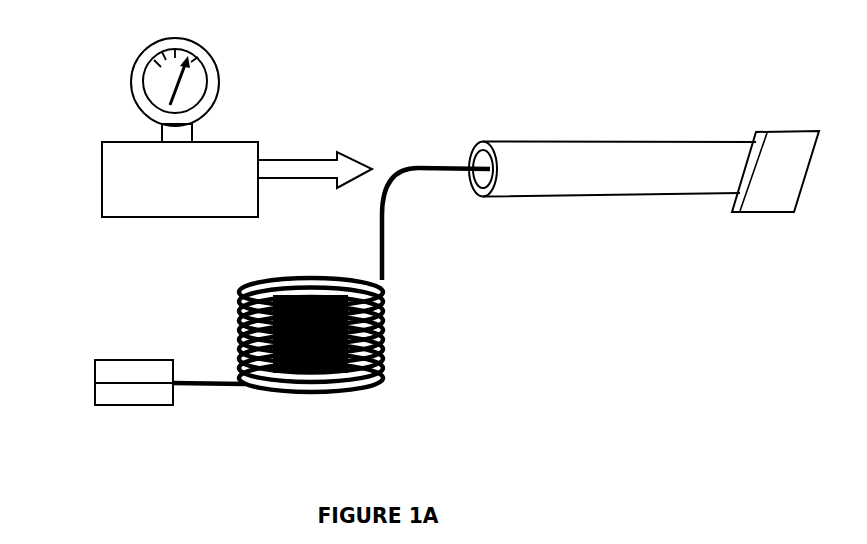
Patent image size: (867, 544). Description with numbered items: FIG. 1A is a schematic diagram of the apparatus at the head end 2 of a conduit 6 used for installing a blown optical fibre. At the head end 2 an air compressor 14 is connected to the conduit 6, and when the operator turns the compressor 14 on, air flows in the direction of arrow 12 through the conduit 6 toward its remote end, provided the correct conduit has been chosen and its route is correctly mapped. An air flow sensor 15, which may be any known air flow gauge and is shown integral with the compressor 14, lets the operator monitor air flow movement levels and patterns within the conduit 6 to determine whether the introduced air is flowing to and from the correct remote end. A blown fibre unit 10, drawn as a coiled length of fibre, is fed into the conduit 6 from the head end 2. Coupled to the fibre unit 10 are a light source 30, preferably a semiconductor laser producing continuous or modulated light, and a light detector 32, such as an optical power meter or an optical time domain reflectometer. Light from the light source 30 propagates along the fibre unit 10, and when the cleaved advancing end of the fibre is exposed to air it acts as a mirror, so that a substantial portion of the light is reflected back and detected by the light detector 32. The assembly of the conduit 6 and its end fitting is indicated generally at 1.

The sampling device 1 is at (605, 230).
The head end 2 is at (100, 73).
The conduit 6 is at (550, 142).
The blown fibre unit 10 is at (382, 232).
The arrow 12 is at (312, 158).
The air compressor 14 is at (237, 140).
The air flow sensor 15 is at (215, 60).
The light source 30 is at (93, 377).
The light detector 32 is at (93, 392).